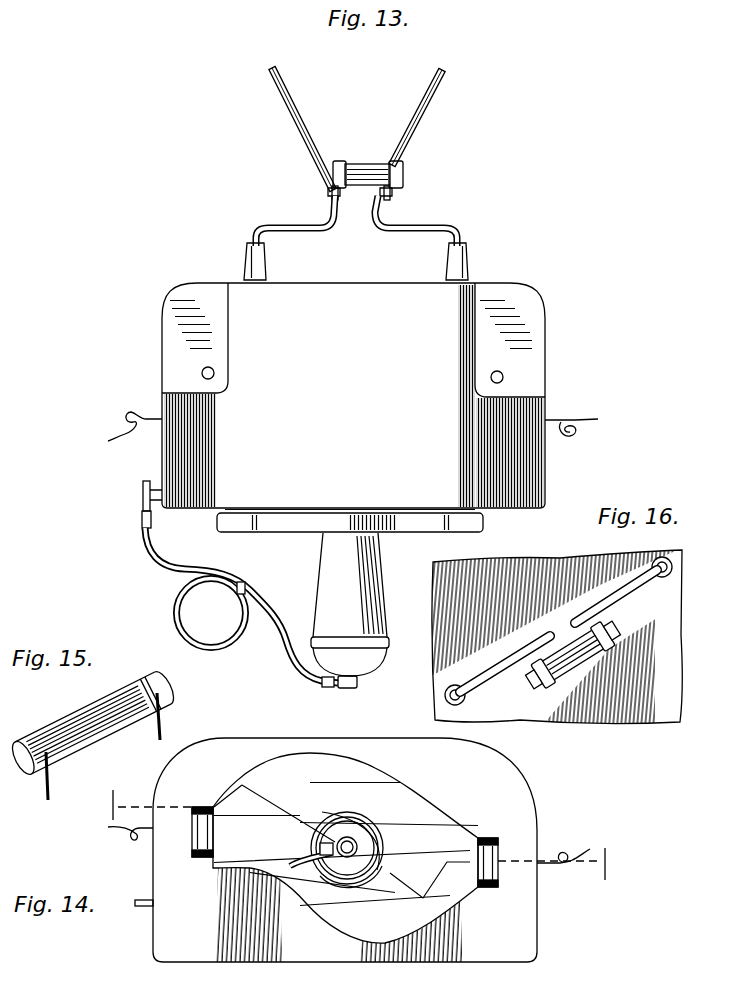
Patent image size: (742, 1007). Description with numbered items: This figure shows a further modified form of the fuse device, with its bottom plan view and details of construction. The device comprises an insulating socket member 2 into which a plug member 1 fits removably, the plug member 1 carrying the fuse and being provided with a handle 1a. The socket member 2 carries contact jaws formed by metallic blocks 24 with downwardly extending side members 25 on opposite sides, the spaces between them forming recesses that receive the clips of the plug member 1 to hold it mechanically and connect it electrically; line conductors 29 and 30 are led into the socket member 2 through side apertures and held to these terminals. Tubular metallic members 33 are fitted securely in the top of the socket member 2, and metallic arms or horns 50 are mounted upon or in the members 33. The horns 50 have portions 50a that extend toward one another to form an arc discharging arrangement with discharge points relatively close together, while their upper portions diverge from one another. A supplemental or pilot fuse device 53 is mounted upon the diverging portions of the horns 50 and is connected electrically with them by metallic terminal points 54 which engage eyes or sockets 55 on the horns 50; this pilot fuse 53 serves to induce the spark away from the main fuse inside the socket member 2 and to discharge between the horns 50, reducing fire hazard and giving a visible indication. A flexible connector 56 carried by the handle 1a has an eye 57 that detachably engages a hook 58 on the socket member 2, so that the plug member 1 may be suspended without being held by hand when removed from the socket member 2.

In FIG. 13, the plug member 1 is at (441, 523).
In FIG. 14, the plug member 1 is at (440, 902).
In FIG. 13, the handle 1a is at (381, 592).
In FIG. 14, the handle 1a is at (352, 884).
In FIG. 13, the socket member 2 is at (354, 296).
In FIG. 16, the socket member 2 is at (645, 712).
In FIG. 14, the socket member 2 is at (349, 850).
In FIG. 14, the metallic blocks 24 is at (200, 838).
In FIG. 14, the side members 25 is at (210, 807).
In FIG. 13, the conductor 29 is at (560, 420).
In FIG. 13, the conductor 30 is at (148, 413).
In FIG. 13, the tubular metallic members 33 is at (267, 260).
In FIG. 16, the tubular metallic members 33 is at (668, 560).
In FIG. 13, the arms or horns 50 is at (288, 88).
In FIG. 16, the arms or horns 50 is at (600, 598).
In FIG. 13, the portions 50a is at (432, 227).
In FIG. 16, the portions 50a is at (648, 578).
In FIG. 13, the fuse device 53 is at (367, 170).
In FIG. 16, the fuse device 53 is at (567, 672).
In FIG. 15, the fuse device 53 is at (104, 704).
In FIG. 13, the metallic terminal points 54 is at (340, 193).
In FIG. 15, the metallic terminal points 54 is at (164, 722).
In FIG. 13, the eyes or sockets 55 is at (328, 190).
In FIG. 16, the eyes or sockets 55 is at (606, 620).
In FIG. 13, the flexible connector 56 is at (283, 630).
In FIG. 14, the flexible connector 56 is at (318, 852).
In FIG. 13, the eye 57 is at (142, 512).
In FIG. 13, the hook 58 is at (143, 494).
In FIG. 14, the hook 58 is at (138, 907).